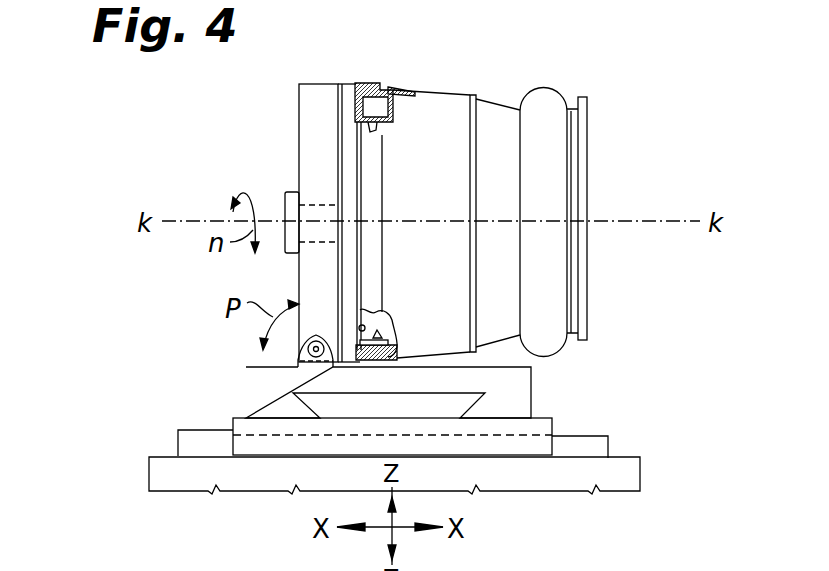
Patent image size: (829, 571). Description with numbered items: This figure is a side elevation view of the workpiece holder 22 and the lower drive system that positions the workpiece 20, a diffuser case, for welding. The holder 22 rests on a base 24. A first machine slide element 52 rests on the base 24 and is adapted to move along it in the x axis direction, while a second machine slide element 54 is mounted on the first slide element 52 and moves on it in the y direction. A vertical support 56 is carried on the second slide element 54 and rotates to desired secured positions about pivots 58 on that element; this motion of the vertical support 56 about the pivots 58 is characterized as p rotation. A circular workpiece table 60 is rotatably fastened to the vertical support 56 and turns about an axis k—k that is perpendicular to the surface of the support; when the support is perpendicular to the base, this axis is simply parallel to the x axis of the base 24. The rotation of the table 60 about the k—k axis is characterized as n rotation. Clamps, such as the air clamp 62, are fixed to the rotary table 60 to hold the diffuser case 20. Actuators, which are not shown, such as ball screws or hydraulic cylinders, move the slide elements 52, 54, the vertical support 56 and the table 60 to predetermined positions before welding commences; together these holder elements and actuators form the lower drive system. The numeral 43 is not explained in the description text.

The workpiece 20 is at (497, 90).
The holder 22 is at (158, 403).
The base 24 is at (623, 468).
The lens barrel 43 is at (355, 147).
The first machine slide element 52 is at (537, 427).
The second machine slide element 54 is at (523, 387).
The vertical support 56 is at (306, 103).
The pivots 58 is at (317, 352).
The circular workpiece table 60 is at (347, 93).
The air clamp 62 is at (375, 347).